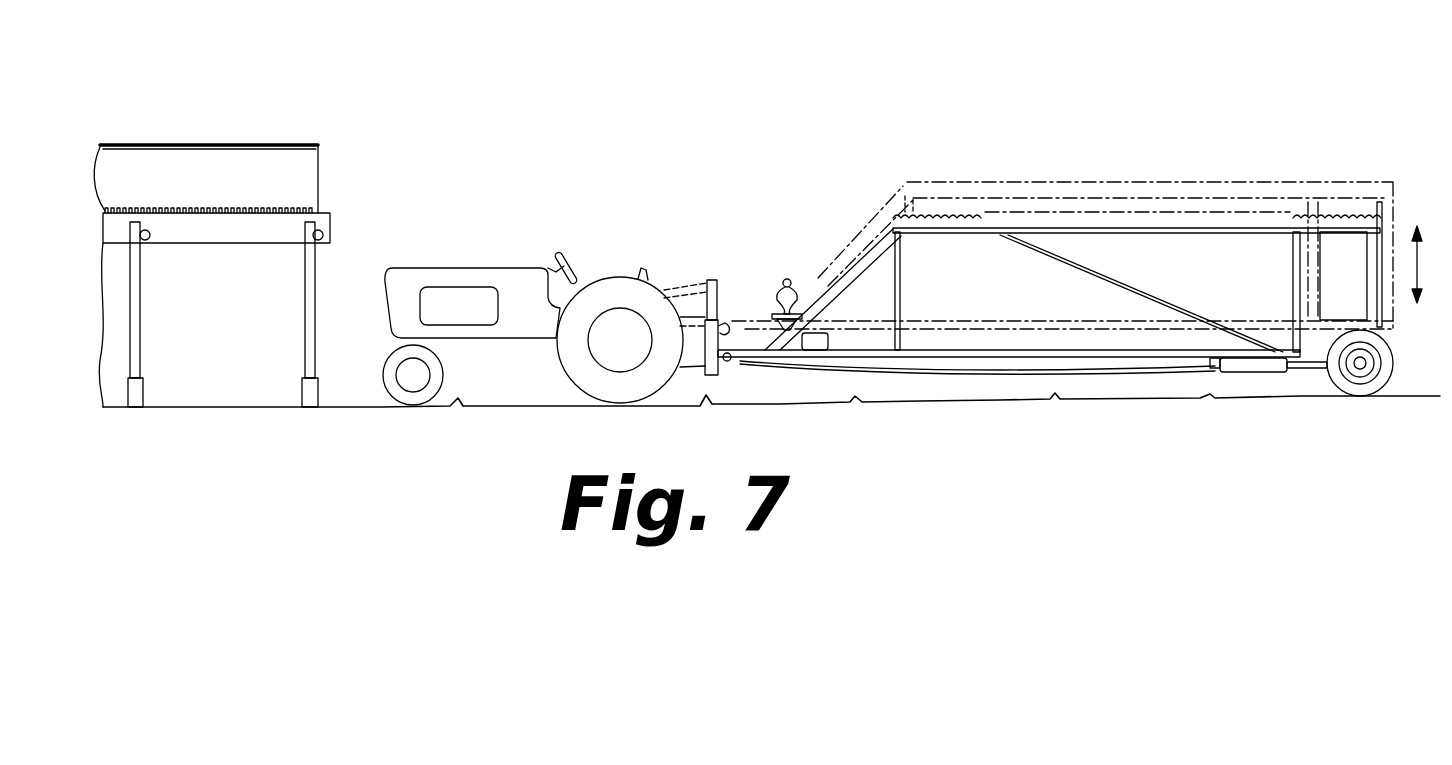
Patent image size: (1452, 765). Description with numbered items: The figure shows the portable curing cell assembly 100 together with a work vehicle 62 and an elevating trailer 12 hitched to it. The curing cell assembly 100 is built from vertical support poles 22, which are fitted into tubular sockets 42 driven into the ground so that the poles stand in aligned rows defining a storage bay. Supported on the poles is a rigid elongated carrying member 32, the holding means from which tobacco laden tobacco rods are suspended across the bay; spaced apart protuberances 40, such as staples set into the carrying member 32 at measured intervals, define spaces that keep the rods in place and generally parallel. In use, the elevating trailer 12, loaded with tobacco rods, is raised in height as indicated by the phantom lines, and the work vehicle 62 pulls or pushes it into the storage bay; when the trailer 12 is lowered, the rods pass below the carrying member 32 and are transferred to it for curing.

The portable curing cell assembly 100 is at (210, 122).
The spaced apart protuberances 40 is at (305, 210).
The carrying member 32 is at (258, 234).
The vertical support poles 22 is at (140, 295).
The tubular sockets 42 is at (143, 392).
The work vehicle 62 is at (470, 268).
The elevating trailer 12 is at (1158, 166).